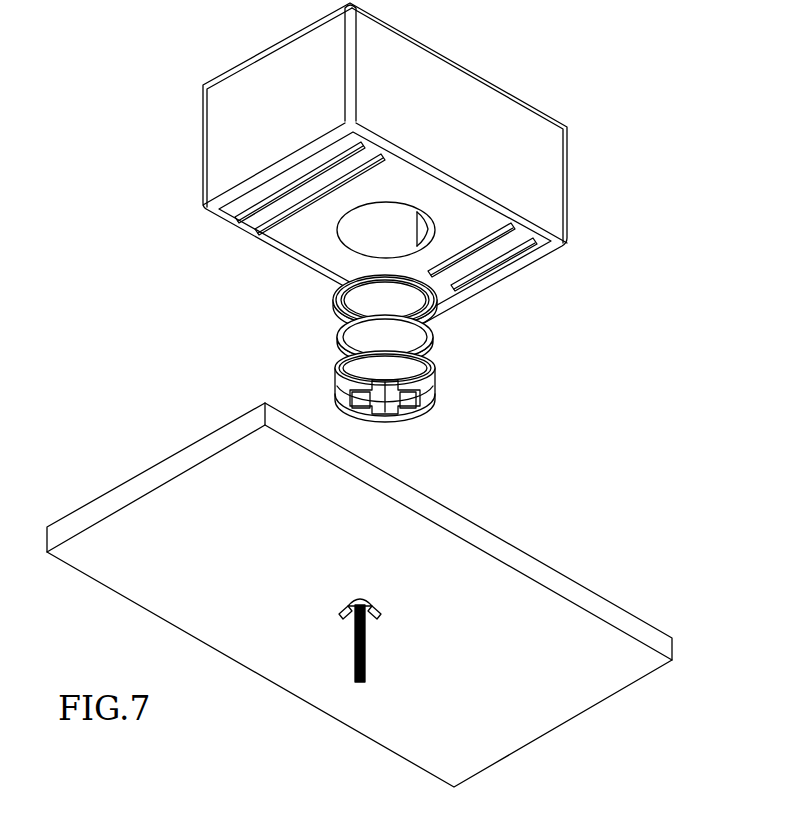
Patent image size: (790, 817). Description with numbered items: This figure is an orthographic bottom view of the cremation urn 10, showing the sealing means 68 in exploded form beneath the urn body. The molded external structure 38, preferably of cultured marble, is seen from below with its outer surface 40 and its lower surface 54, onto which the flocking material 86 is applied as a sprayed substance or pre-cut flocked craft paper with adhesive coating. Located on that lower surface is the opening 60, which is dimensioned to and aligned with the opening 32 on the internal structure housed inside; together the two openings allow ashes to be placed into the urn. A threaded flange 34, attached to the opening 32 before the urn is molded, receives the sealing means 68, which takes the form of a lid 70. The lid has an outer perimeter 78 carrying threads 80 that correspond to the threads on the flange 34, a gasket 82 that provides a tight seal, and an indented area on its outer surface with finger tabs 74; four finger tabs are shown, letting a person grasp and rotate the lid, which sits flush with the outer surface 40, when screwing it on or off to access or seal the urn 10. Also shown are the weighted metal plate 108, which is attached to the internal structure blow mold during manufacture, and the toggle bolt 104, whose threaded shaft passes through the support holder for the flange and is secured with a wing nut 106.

The cremation urn 10 is at (138, 45).
The external structure 38 is at (487, 110).
The outer surface 40 is at (406, 165).
The opening 32 is at (387, 227).
The opening 60 is at (270, 199).
The lower surface 54 is at (473, 223).
The flocking material 86 is at (458, 225).
The sealing means 68 is at (192, 262).
The threaded flange 34 is at (333, 302).
The gasket 82 is at (432, 343).
The outer perimeter 78 is at (340, 372).
The threads 80 is at (362, 403).
The finger tab 74 is at (432, 390).
The lid 70 is at (392, 403).
The weighted metal plate 108 is at (493, 543).
The wing nut 106 is at (340, 603).
The toggle bolt 104 is at (365, 660).